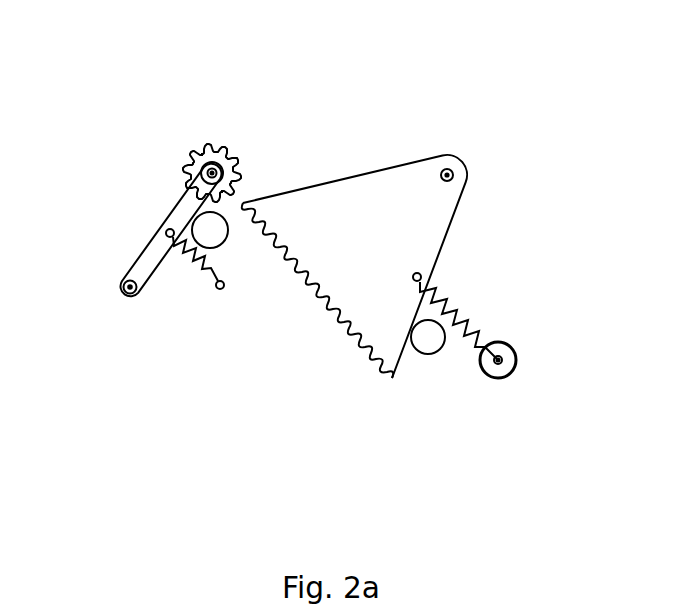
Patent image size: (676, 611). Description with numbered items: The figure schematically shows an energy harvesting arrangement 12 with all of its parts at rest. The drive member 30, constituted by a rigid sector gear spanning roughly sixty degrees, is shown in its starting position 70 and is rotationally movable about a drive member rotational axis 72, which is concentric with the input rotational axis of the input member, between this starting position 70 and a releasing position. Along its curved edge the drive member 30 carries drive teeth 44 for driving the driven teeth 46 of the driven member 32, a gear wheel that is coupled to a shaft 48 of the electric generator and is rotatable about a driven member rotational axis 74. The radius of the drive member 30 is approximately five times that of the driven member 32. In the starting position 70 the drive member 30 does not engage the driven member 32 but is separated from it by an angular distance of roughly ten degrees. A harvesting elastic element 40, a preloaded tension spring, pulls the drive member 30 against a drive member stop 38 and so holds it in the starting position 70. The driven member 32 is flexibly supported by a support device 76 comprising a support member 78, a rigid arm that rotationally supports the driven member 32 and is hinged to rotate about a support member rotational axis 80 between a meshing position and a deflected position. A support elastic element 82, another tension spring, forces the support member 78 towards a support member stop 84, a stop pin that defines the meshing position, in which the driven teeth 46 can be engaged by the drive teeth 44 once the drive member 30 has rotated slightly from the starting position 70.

The energy harvesting arrangement 12 is at (230, 66).
The drive member 30 is at (340, 258).
The driven member 32 is at (188, 155).
The drive member stop 38 is at (428, 338).
The harvesting elastic element 40 is at (468, 310).
The drive teeth 44 is at (333, 350).
The driven teeth 46 is at (235, 152).
The shaft 48 is at (228, 172).
The starting position 70 is at (395, 106).
The drive member rotational axis 72 is at (453, 175).
The driven member rotational axis 74 is at (190, 173).
The support device 76 is at (95, 210).
The support member 78 is at (152, 252).
The support member rotational axis 80 is at (117, 288).
The support elastic element 82 is at (207, 267).
The support member stop 84 is at (210, 230).